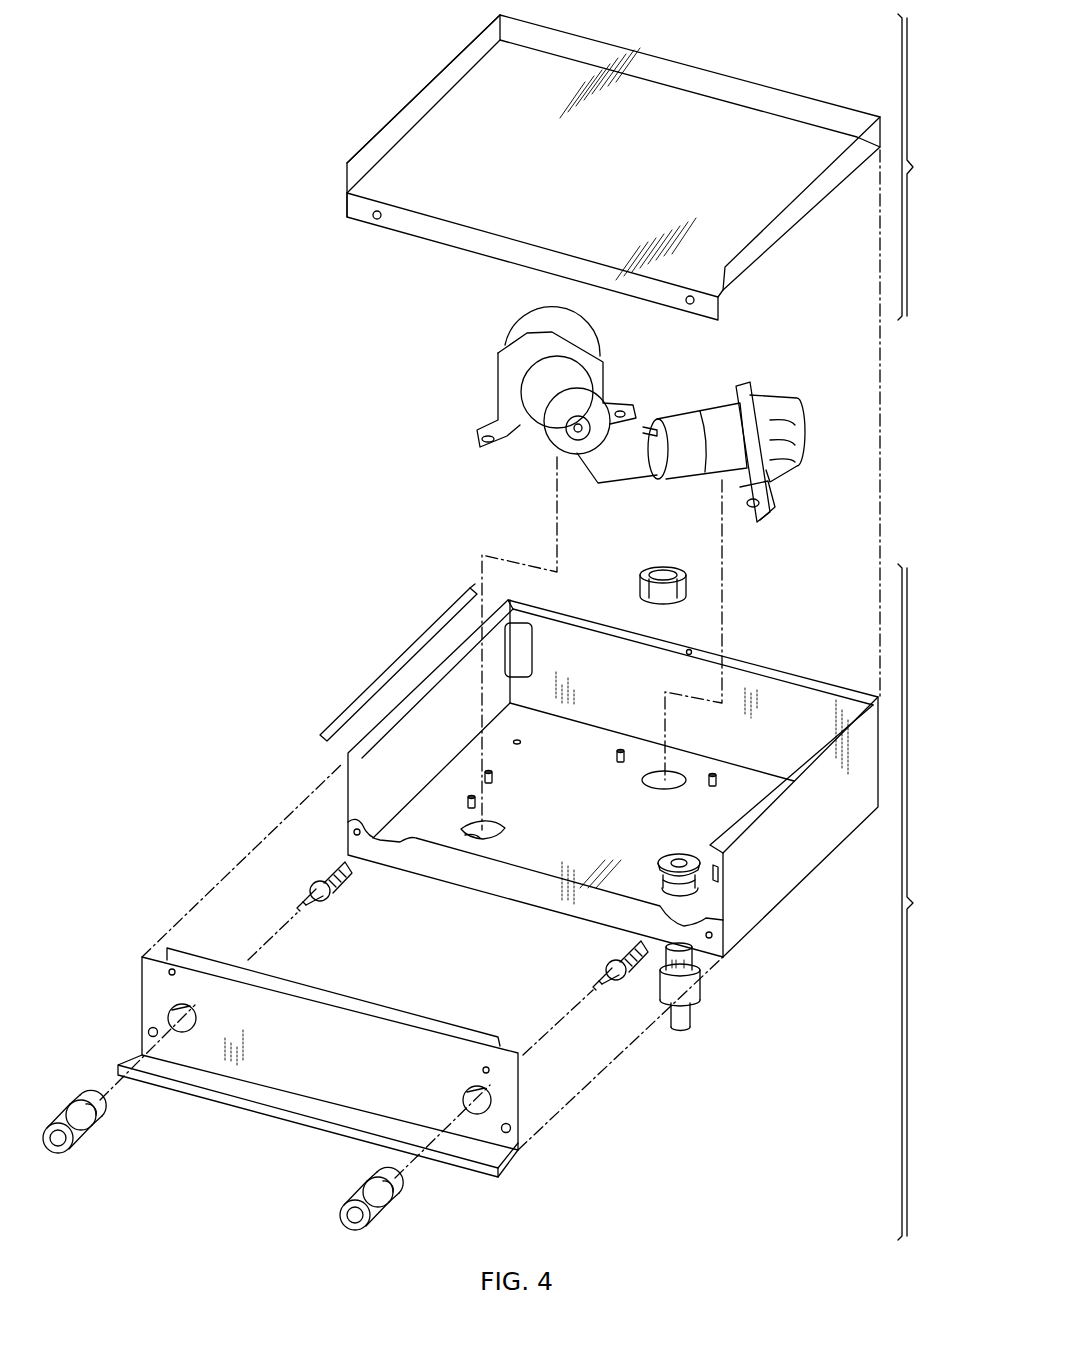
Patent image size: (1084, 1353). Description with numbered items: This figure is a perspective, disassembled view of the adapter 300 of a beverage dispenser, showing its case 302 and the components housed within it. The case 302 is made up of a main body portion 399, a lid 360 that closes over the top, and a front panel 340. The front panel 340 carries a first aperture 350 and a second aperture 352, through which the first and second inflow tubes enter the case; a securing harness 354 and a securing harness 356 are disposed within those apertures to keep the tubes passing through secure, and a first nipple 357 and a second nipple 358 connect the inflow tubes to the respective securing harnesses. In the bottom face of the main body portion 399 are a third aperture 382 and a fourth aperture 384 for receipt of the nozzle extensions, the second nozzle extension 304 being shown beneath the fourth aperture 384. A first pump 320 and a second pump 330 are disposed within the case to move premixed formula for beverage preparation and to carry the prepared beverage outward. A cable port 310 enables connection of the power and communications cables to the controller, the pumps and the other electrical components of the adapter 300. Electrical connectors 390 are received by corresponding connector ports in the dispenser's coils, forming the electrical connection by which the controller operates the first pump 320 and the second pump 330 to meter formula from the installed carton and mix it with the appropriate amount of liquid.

The adapter 300 is at (138, 160).
The case 302 is at (931, 627).
The second nozzle extension 304 is at (697, 1020).
The cable port 310 is at (652, 567).
The first pump 320 is at (500, 413).
The second pump 330 is at (769, 392).
The front panel 340 is at (505, 1175).
The first aperture 350 is at (168, 1013).
The second aperture 352 is at (463, 1095).
The securing harness 354 is at (80, 1156).
The securing harness 356 is at (365, 1235).
The first nipple 357 is at (331, 906).
The second nipple 358 is at (597, 974).
The lid 360 is at (766, 86).
The third aperture 382 is at (505, 834).
The fourth aperture 384 is at (662, 866).
The electrical connectors 390 is at (466, 797).
The main body portion 399 is at (392, 664).